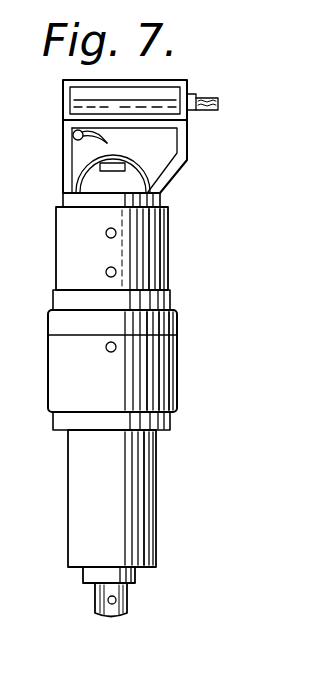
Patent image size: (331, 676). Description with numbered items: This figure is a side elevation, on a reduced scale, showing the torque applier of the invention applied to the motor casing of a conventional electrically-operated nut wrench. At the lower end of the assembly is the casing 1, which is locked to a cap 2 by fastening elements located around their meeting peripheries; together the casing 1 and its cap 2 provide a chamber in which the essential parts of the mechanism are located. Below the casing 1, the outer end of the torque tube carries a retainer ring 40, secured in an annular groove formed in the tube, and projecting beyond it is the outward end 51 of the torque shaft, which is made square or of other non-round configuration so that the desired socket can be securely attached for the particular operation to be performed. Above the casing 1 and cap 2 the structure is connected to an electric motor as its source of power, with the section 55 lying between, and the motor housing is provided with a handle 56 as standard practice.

The casing 1 is at (178, 375).
The cap 2 is at (178, 326).
The retainer ring 40 is at (86, 573).
The outward end of the torque shaft 51 is at (128, 595).
The upper body section 55 is at (168, 233).
The handle 56 is at (186, 140).